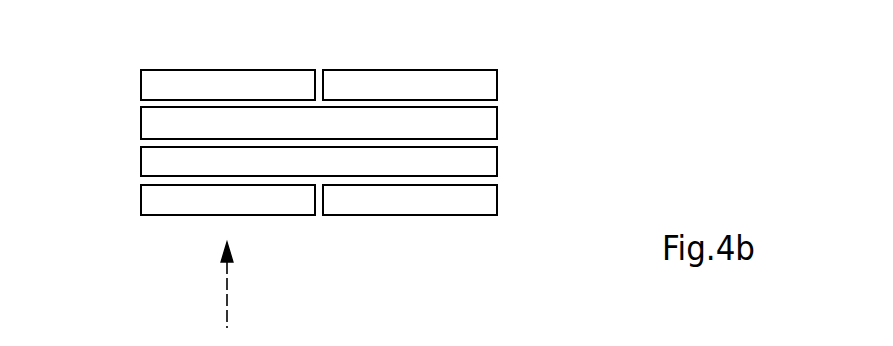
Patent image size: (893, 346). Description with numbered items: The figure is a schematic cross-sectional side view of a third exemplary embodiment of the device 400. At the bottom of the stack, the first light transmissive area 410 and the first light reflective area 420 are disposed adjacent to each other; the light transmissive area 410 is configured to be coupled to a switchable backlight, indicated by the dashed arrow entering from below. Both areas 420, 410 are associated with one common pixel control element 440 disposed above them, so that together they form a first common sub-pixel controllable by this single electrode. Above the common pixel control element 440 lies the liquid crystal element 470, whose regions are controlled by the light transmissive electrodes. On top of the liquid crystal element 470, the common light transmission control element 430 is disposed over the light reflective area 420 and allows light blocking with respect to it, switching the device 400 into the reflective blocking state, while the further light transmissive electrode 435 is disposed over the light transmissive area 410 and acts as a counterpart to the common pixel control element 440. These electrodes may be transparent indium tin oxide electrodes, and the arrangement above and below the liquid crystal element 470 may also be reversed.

The device 400 is at (621, 114).
The first light transmissive area 410 is at (141, 201).
The first light reflective area 420 is at (497, 200).
The common light transmission control element 430 is at (497, 83).
The further light transmissive electrode 435 is at (141, 83).
The common pixel control element 440 is at (497, 161).
The liquid crystal element 470 is at (141, 123).